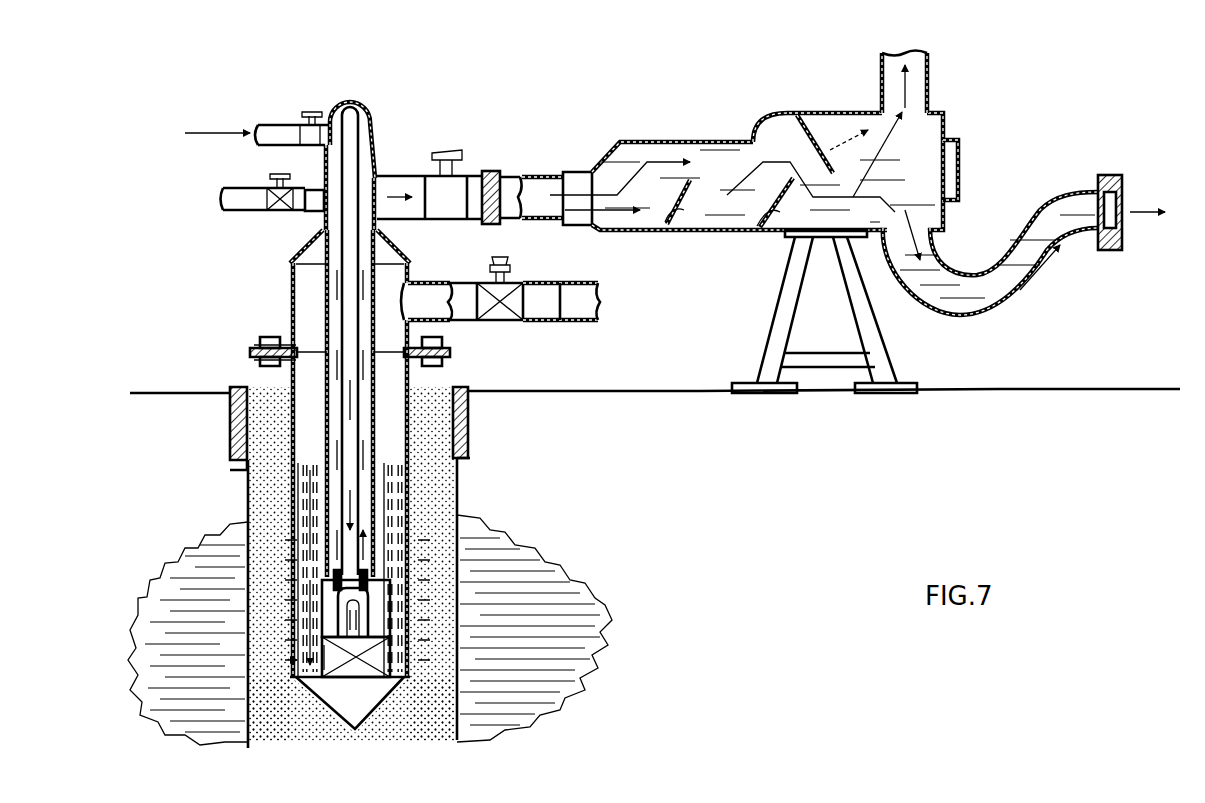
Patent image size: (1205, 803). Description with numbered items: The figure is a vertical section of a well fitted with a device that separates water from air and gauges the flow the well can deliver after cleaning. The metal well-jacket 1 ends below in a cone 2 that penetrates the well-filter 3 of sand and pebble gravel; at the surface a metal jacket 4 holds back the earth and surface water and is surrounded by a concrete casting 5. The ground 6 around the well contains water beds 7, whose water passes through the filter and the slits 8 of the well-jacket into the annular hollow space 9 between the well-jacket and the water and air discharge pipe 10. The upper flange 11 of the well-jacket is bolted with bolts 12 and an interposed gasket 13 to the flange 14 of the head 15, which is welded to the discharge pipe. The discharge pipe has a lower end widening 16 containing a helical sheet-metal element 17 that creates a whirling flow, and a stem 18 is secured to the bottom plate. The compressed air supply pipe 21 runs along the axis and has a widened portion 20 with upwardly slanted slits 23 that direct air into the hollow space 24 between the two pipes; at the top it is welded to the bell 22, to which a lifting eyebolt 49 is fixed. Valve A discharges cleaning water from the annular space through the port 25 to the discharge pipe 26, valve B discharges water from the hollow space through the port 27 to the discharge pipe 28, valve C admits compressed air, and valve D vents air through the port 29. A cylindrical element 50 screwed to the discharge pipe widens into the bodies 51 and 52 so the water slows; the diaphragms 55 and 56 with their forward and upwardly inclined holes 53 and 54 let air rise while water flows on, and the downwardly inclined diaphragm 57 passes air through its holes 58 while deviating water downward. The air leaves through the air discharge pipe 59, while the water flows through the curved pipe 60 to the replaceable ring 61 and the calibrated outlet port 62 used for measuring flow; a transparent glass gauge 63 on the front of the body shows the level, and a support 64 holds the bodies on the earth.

The well-jacket 1 is at (460, 453).
The cone 2 is at (450, 724).
The well-filter 3 is at (250, 730).
The metal jacket 4 is at (247, 452).
The concrete casting 5 is at (230, 428).
The ground 6 is at (154, 428).
The water beds 7 is at (190, 588).
The slits 8 is at (305, 498).
The annular hollow space 9 is at (457, 418).
The water and air discharge pipe 10 is at (325, 455).
The upper flange 11 is at (258, 362).
The bolts 12 is at (268, 337).
The gasket 13 is at (250, 353).
The flange 14 is at (258, 346).
The head 15 is at (291, 308).
The lower end widening 16 is at (330, 678).
The sheet-metal element 17 is at (375, 678).
The stem 18 is at (365, 688).
The widened portion 20 is at (416, 622).
The compressed air supply pipe 21 is at (447, 500).
The bell 22 is at (378, 178).
The slits 23 is at (340, 608).
The hollow space 24 is at (305, 290).
The port 25 is at (422, 307).
The discharge pipe 26 is at (590, 284).
The port 27 is at (384, 206).
The discharge pipe 28 is at (490, 172).
The port 29 is at (316, 189).
The lifting eyebolt 49 is at (356, 106).
The cylindrical element 50 is at (568, 173).
The body 51 is at (652, 142).
The body 52 is at (775, 115).
The holes 53 is at (667, 230).
The holes 54 is at (780, 230).
The diaphragm 55 is at (692, 228).
The diaphragm 56 is at (762, 228).
The diaphragm 57 is at (815, 150).
The holes 58 is at (818, 140).
The gas outlet pipe 59 is at (880, 86).
The pipe 60 is at (990, 316).
The replaceable ring 61 is at (1123, 232).
The calibrated outlet port 62 is at (1123, 200).
The side outlet 63 is at (962, 178).
The support 64 is at (866, 328).
The valve A is at (502, 318).
The valve B is at (445, 206).
The valve C is at (300, 140).
The valve D is at (262, 200).